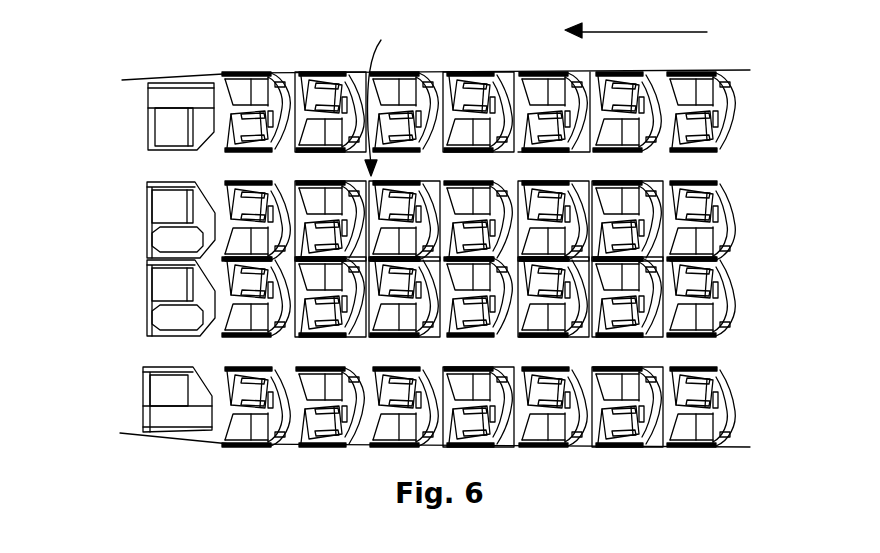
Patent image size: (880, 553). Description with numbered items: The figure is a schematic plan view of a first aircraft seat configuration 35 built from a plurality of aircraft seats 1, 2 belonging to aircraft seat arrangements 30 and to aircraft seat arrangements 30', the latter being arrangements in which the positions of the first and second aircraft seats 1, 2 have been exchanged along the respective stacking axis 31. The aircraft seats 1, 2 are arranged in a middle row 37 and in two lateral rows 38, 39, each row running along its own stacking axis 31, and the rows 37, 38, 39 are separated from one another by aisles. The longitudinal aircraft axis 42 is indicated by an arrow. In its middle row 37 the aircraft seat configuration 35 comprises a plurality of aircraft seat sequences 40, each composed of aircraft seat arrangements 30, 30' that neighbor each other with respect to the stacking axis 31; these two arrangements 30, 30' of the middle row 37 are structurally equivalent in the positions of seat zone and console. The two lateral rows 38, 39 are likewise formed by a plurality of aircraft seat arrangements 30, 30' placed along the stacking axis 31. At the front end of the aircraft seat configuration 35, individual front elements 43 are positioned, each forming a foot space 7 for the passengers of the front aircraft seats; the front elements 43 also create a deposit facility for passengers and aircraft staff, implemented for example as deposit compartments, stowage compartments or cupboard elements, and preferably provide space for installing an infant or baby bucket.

The first aircraft seat 1 is at (474, 413).
The second aircraft seat 2 is at (555, 425).
The foot space 7 is at (203, 131).
The aircraft seat arrangement 30 is at (410, 259).
The aircraft seat arrangement 30' is at (599, 247).
The stacking axis 31 is at (141, 224).
The aircraft seat configuration 35 is at (162, 493).
The middle row 37 is at (507, 254).
The lateral row 38 is at (502, 86).
The lateral row 39 is at (512, 448).
The aircraft seat sequence 40 is at (394, 93).
The longitudinal aircraft axis 42 is at (657, 23).
The front element 43 is at (177, 102).